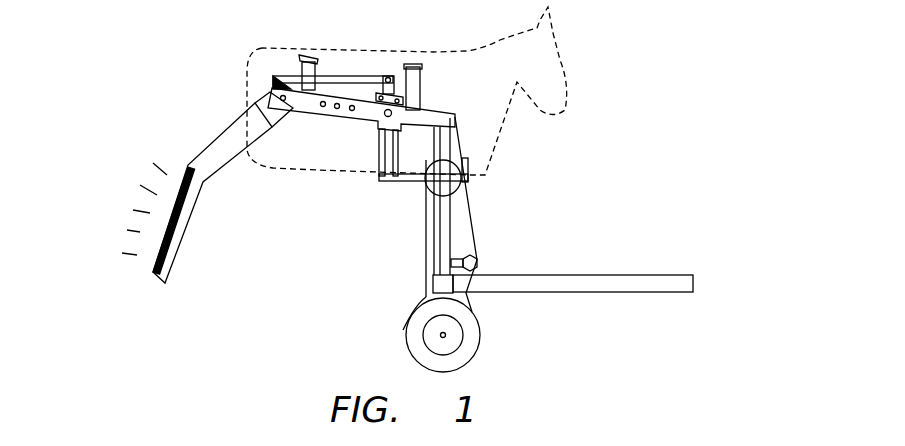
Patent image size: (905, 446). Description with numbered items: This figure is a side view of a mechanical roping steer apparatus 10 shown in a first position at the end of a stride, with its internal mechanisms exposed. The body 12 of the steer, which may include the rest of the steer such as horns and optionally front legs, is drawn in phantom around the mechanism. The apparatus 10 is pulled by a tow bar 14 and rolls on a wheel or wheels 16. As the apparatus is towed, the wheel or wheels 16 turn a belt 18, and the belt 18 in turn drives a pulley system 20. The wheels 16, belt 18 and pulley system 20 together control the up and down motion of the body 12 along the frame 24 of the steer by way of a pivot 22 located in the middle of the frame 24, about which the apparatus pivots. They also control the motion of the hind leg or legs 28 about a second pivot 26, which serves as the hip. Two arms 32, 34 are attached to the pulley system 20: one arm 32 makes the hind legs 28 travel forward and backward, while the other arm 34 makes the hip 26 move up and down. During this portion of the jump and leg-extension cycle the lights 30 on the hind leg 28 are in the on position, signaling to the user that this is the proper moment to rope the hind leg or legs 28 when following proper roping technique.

The mechanical roping steer apparatus 10 is at (650, 46).
The body 12 is at (430, 53).
The tow bar 14 is at (587, 275).
The wheel or wheels 16 is at (407, 338).
The belt 18 is at (475, 238).
The pulley system 20 is at (475, 162).
The pivot 22 is at (384, 117).
The frame 24 is at (350, 100).
The pivot (hip) 26 is at (258, 66).
The hind leg or legs 28 is at (193, 213).
The lights 30 is at (150, 265).
The arm 32 is at (407, 185).
The arm 34 is at (453, 150).